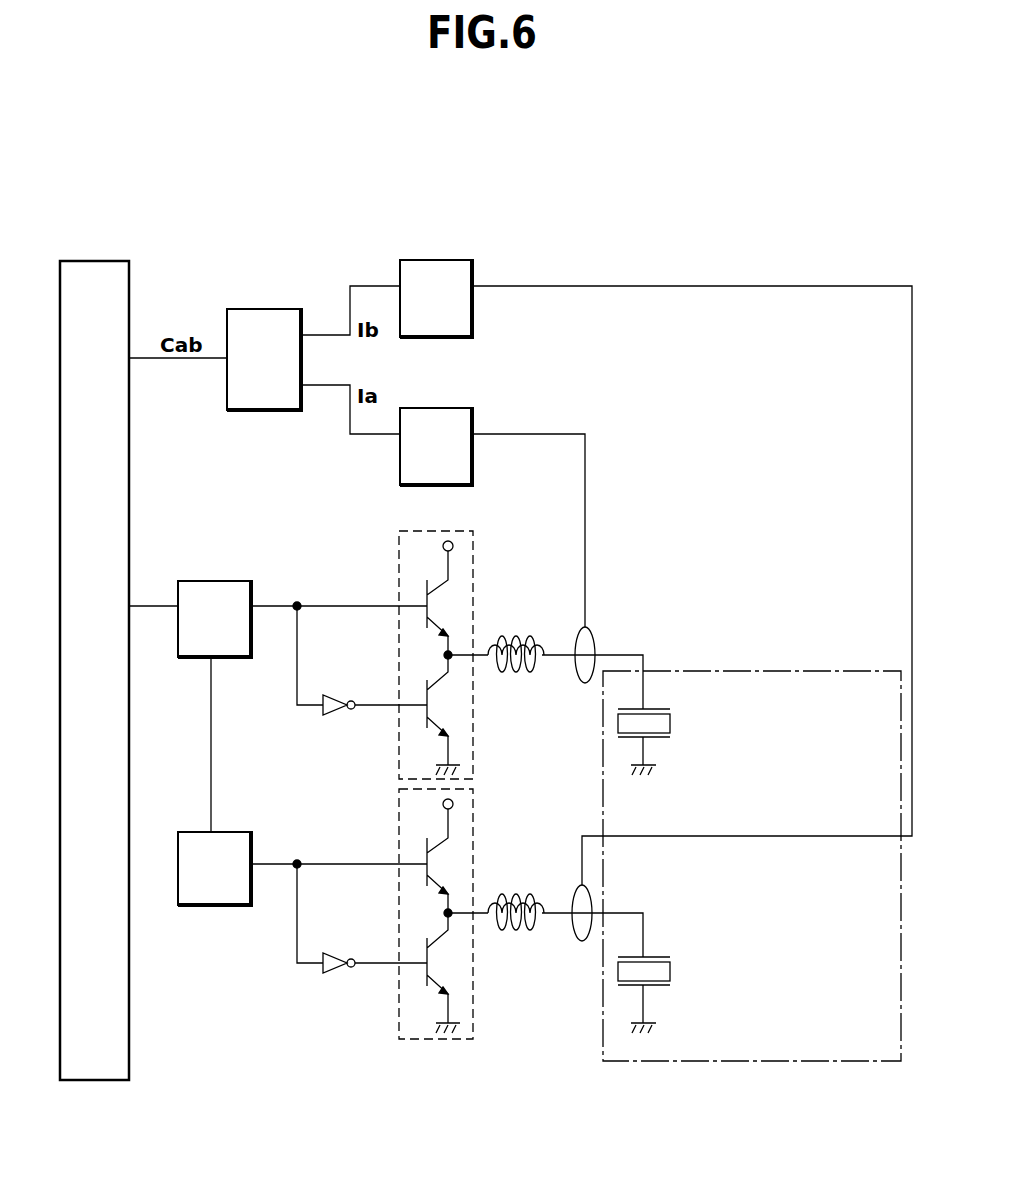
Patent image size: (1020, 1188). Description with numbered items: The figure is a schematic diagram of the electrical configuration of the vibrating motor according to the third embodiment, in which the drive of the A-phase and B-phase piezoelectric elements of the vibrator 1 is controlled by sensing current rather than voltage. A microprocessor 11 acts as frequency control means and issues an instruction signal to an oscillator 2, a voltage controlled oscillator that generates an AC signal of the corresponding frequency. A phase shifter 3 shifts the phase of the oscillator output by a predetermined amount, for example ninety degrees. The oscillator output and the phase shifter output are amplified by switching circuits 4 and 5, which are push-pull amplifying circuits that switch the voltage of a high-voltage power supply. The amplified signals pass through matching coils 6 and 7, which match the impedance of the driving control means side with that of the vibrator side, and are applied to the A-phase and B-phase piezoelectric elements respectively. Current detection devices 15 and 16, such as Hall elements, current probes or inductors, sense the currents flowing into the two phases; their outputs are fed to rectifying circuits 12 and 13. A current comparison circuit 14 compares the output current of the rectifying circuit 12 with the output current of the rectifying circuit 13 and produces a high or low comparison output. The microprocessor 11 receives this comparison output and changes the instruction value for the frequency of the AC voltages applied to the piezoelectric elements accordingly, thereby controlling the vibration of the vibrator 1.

The vibrator 1 is at (760, 671).
The oscillator 2 is at (226, 581).
The phase shifter 3 is at (212, 905).
The switching circuit 4 is at (476, 562).
The switching circuit 5 is at (476, 840).
The matching coil 6 is at (524, 635).
The matching coil 7 is at (512, 893).
The microprocessor 11 is at (129, 795).
The rectifying circuit 12 is at (440, 408).
The rectifying circuit 13 is at (443, 260).
The current comparison circuit 14 is at (268, 309).
The current detection device 15 is at (590, 630).
The current detection device 16 is at (578, 887).